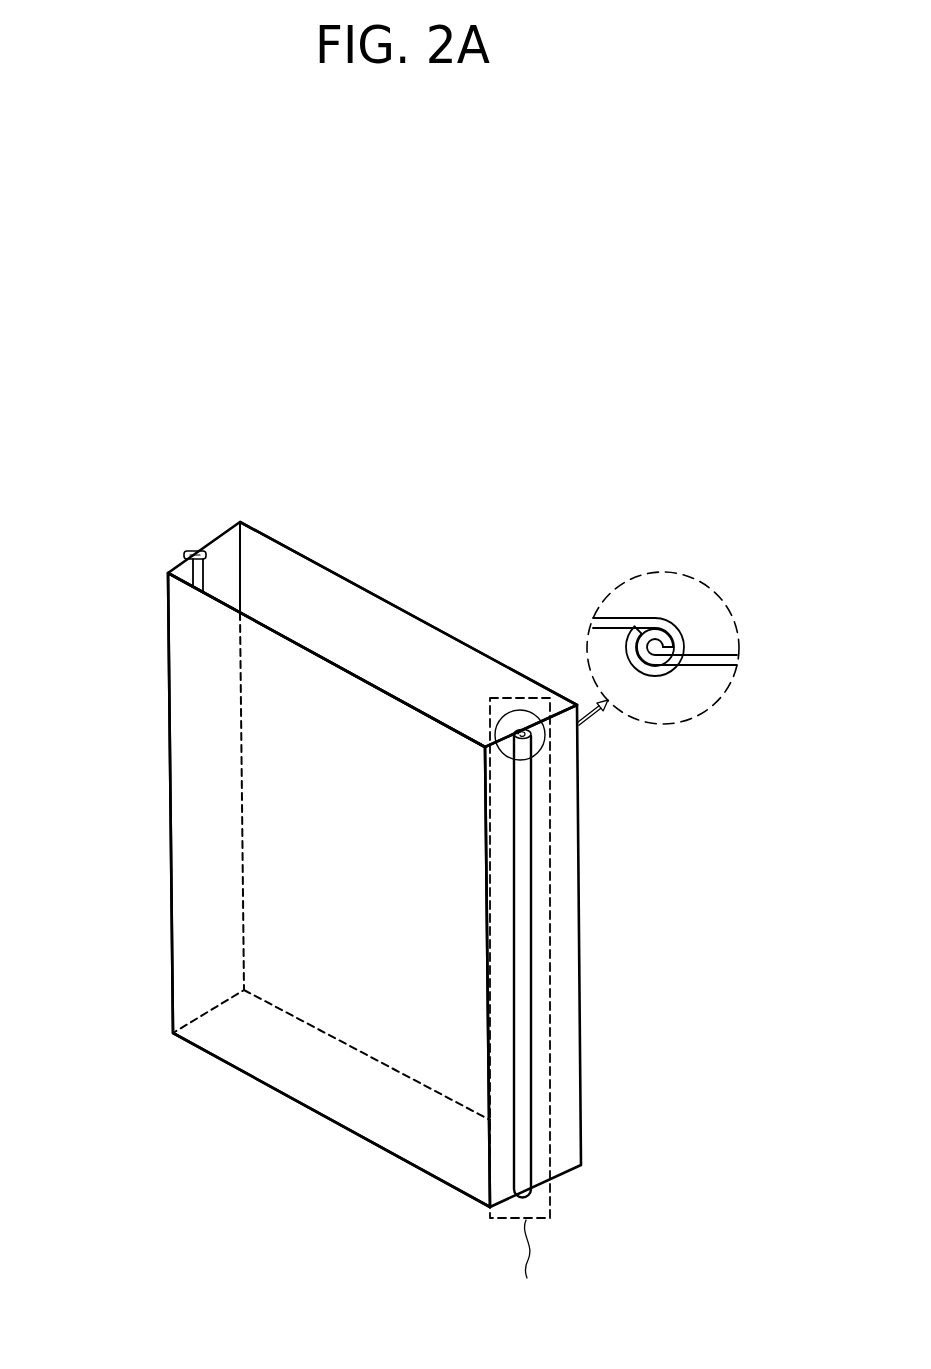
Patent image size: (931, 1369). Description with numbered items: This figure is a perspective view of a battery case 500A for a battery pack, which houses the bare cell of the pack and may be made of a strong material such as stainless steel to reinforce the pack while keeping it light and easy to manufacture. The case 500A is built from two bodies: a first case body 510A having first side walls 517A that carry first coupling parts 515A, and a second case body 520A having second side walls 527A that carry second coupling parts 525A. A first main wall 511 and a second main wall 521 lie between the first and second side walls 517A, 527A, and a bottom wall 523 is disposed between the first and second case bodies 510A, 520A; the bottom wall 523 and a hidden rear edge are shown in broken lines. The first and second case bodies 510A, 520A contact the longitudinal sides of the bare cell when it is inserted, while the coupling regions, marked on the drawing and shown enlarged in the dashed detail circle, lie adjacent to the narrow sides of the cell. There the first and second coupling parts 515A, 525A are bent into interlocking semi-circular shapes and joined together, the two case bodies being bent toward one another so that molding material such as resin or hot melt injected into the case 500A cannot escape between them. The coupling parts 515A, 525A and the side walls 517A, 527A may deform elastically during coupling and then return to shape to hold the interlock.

The case 500A is at (286, 492).
The first case body 510A is at (410, 612).
The first main wall 511 is at (406, 666).
The second case body 520A is at (266, 890).
The second main wall 521 is at (364, 861).
The bottom wall 523 is at (314, 1076).
The first side walls 517A is at (570, 884).
The second side walls 527A is at (496, 1169).
The second coupling parts 525A is at (631, 610).
The first coupling parts 515A is at (717, 646).